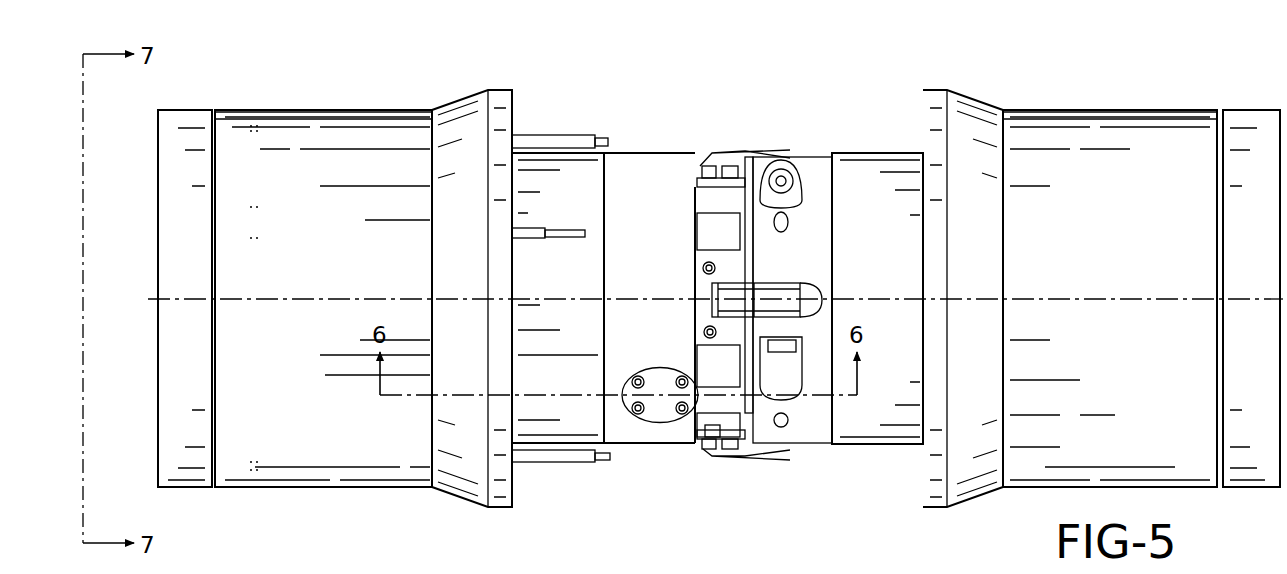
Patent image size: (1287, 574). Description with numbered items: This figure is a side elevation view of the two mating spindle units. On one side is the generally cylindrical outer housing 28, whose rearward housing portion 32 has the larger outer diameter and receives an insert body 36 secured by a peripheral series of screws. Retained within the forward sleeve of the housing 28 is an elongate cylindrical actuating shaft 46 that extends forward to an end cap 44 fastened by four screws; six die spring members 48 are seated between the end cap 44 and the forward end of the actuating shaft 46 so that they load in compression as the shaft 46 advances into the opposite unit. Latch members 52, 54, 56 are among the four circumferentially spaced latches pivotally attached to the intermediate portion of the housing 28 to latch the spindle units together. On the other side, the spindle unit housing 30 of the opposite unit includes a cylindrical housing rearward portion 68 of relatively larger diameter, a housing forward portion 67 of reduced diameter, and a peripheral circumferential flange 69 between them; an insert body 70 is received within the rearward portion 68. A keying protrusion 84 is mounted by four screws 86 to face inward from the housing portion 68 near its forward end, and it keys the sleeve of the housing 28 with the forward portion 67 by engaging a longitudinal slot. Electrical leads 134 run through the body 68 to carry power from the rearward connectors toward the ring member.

The outer housing 28 is at (1121, 112).
The spindle unit housing 30 is at (316, 112).
The rearward housing portion 32 is at (1062, 135).
The insert body 36 is at (1247, 138).
The end cap 44 is at (272, 573).
The actuating shaft 46 is at (385, 573).
The die spring members 48 is at (320, 573).
The latch member 52 is at (729, 452).
The latch member 54 is at (740, 296).
The latch member 56 is at (723, 152).
The housing forward portion 67 is at (651, 187).
The housing rearward portion 68 is at (373, 135).
The circumferential flange 69 is at (460, 125).
The insert body 70 is at (189, 138).
The keying protrusion 84 is at (657, 418).
The screws 86 is at (640, 402).
The leads 134 is at (553, 140).